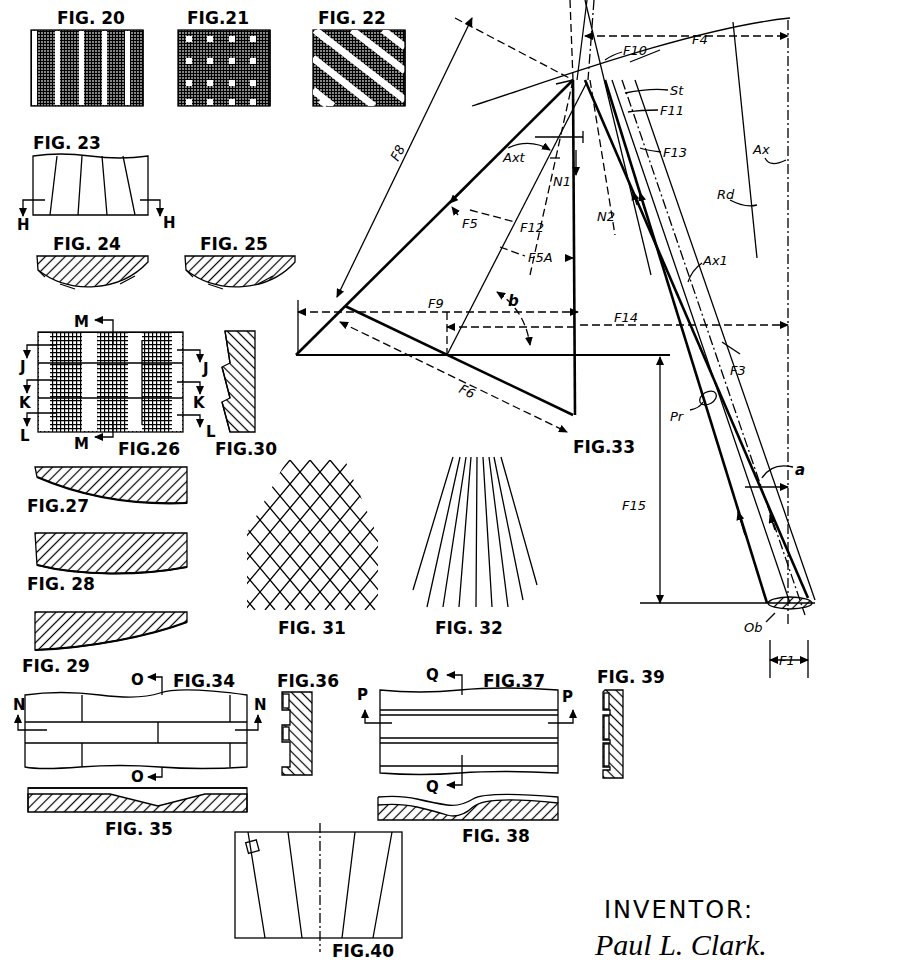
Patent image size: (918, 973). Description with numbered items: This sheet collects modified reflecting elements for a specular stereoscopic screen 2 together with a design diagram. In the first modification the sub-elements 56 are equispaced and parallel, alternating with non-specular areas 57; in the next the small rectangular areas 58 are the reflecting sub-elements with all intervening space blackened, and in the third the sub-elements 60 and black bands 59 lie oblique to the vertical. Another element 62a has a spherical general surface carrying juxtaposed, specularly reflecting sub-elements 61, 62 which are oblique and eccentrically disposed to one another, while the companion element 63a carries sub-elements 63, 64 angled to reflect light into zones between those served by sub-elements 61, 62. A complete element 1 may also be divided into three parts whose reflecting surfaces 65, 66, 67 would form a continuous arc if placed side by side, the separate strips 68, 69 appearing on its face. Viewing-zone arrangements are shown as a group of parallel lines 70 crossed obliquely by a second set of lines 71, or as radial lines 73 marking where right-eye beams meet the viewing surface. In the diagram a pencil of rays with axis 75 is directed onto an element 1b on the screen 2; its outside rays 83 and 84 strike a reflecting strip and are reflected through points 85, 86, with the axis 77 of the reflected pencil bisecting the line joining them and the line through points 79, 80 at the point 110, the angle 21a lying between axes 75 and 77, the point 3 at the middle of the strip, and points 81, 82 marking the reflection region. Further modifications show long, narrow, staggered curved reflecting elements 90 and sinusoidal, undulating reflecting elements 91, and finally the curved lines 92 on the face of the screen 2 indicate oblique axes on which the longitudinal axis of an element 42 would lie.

In FIG. 20, the complete element 1 is at (140, 80).
In FIG. 21, the complete element 1 is at (262, 86).
In FIG. 22, the complete element 1 is at (398, 80).
In FIG. 20, the screen 2 is at (149, 68).
In FIG. 21, the screen 2 is at (276, 68).
In FIG. 22, the screen 2 is at (412, 68).
In FIG. 24, the screen 2 is at (40, 260).
In FIG. 25, the screen 2 is at (188, 260).
In FIG. 30, the screen 2 is at (256, 378).
In FIG. 27, the screen 2 is at (184, 481).
In FIG. 28, the screen 2 is at (184, 544).
In FIG. 29, the screen 2 is at (164, 623).
In FIG. 33, the screen 2 is at (516, 92).
In FIG. 35, the screen 2 is at (45, 812).
In FIG. 36, the screen 2 is at (310, 723).
In FIG. 38, the screen 2 is at (440, 820).
In FIG. 39, the screen 2 is at (623, 738).
In FIG. 40, the screen 2 is at (310, 832).
In FIG. 33, the middle point of strip 3 is at (548, 106).
In FIG. 20, the sub-elements 56 is at (50, 106).
In FIG. 20, the non-specular areas 57 is at (72, 106).
In FIG. 21, the rectangular reflecting sub-elements 58 is at (208, 108).
In FIG. 22, the black bands 59 is at (332, 107).
In FIG. 22, the oblique sub-elements 60 is at (318, 42).
In FIG. 23, the reflecting sub-element 61 is at (90, 184).
In FIG. 24, the reflecting sub-element 61 is at (47, 283).
In FIG. 23, the reflecting sub-element 62 is at (97, 185).
In FIG. 24, the reflecting sub-element 62 is at (68, 289).
In FIG. 24, the element 62a is at (115, 287).
In FIG. 25, the sub-element 63 is at (204, 283).
In FIG. 25, the sub-element 64 is at (230, 290).
In FIG. 25, the element 63a is at (252, 287).
In FIG. 30, the reflecting surface 65 is at (227, 344).
In FIG. 27, the reflecting surface 65 is at (112, 500).
In FIG. 30, the reflecting surface 66 is at (226, 390).
In FIG. 28, the reflecting surface 66 is at (130, 573).
In FIG. 30, the reflecting surface 67 is at (227, 420).
In FIG. 29, the reflecting surface 67 is at (140, 635).
In FIG. 26, the stripe 68 is at (133, 345).
In FIG. 26, the stripe 69 is at (153, 342).
In FIG. 31, the parallel lines 70 is at (272, 482).
In FIG. 31, the mesh strand 71 is at (356, 490).
In FIG. 32, the radial lines 73 is at (450, 500).
In FIG. 33, the axis of incident pencil 75 is at (632, 130).
In FIG. 33, the axis of reflected pencil 77 is at (492, 267).
In FIG. 33, the point 79 is at (347, 305).
In FIG. 33, the point 80 is at (577, 410).
In FIG. 33, the point 81 is at (560, 84).
In FIG. 33, the point 82 is at (620, 78).
In FIG. 33, the outside ray 83 is at (640, 238).
In FIG. 33, the outside ray 84 is at (652, 230).
In FIG. 33, the point 85 is at (483, 364).
In FIG. 33, the point 86 is at (580, 357).
In FIG. 33, the point 110 is at (447, 353).
In FIG. 33, the element 1b is at (650, 55).
In FIG. 33, the angle 21a is at (570, 159).
In FIG. 34, the curved reflecting elements 90 is at (247, 731).
In FIG. 35, the curved reflecting elements 90 is at (222, 794).
In FIG. 36, the curved reflecting elements 90 is at (284, 752).
In FIG. 37, the reflecting elements 91 is at (469, 731).
In FIG. 38, the reflecting elements 91 is at (490, 800).
In FIG. 39, the reflecting elements 91 is at (602, 755).
In FIG. 40, the curved lines 92 is at (375, 877).
In FIG. 40, the element 42 is at (258, 852).